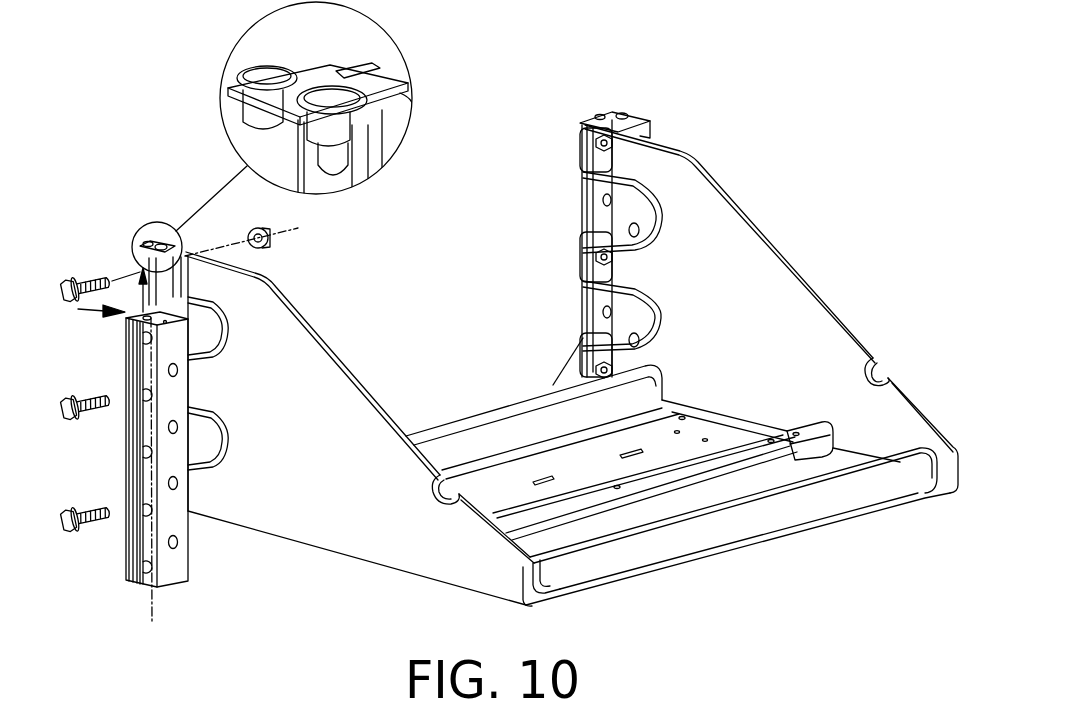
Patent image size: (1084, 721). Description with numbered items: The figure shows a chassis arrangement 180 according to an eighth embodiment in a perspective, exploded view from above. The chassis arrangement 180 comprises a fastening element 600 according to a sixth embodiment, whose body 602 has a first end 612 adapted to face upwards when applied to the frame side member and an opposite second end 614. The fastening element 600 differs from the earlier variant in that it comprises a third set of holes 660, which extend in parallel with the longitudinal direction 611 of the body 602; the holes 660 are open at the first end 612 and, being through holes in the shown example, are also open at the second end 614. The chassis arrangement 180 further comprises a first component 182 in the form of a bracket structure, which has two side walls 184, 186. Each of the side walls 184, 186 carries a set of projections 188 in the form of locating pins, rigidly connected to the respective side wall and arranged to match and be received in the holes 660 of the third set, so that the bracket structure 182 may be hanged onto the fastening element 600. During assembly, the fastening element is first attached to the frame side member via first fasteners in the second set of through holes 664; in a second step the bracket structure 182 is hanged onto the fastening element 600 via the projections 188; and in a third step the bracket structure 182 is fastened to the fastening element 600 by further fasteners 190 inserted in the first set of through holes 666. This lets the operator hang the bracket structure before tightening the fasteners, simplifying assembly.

The chassis arrangement 180 is at (750, 155).
The first component 182 is at (403, 597).
The side wall 184 is at (350, 523).
The side wall 186 is at (760, 308).
The projections 188 is at (270, 147).
The further fasteners 190 is at (80, 284).
The fastening element 600 is at (118, 603).
The body 602 is at (143, 542).
The longitudinal direction 611 is at (152, 597).
The first end 612 is at (133, 327).
The second end 614 is at (140, 588).
The third set of holes 660 is at (80, 311).
The second set of through holes 664 is at (177, 543).
The first set of through holes 666 is at (147, 450).